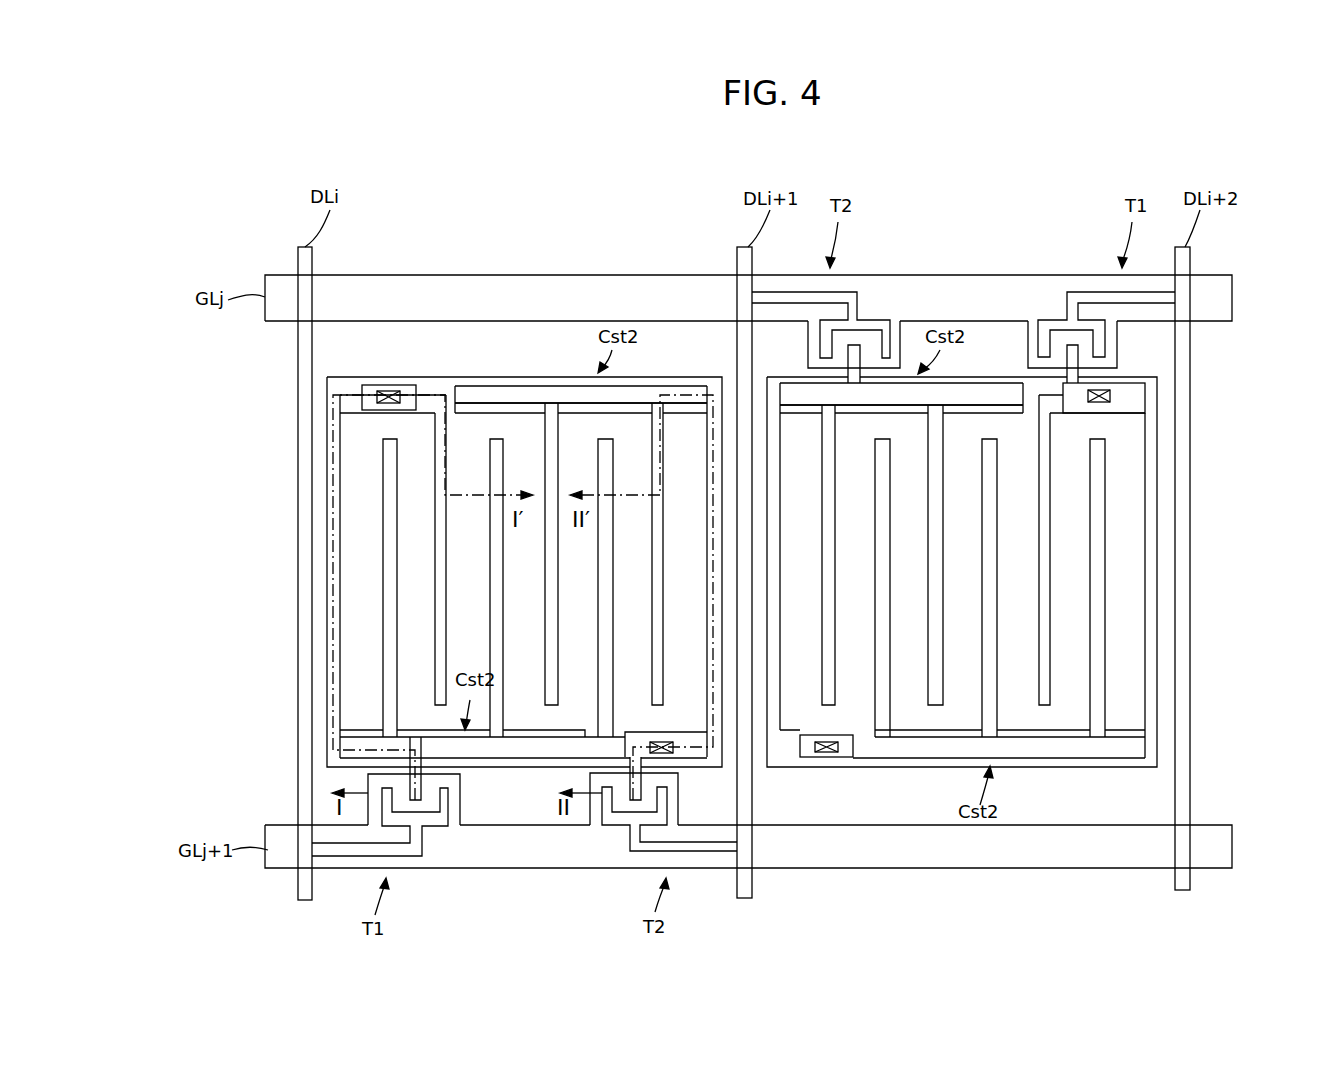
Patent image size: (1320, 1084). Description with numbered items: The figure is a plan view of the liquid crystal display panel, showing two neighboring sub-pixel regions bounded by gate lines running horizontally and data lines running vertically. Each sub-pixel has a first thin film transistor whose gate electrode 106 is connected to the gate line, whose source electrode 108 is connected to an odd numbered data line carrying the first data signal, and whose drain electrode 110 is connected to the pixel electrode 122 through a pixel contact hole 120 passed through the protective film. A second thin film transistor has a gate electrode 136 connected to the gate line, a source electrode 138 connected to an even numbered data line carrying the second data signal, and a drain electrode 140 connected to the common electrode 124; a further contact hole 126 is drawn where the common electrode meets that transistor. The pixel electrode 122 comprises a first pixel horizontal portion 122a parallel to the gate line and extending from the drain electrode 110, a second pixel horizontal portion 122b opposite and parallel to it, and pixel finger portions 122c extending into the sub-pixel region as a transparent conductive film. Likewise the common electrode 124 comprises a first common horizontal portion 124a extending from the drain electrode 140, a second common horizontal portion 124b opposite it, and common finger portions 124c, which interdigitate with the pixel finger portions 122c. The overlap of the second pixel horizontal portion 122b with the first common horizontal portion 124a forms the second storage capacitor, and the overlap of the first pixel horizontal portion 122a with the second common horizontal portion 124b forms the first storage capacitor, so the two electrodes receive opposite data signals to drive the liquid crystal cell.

The gate electrode 106 is at (462, 808).
The source electrode 108 is at (358, 852).
The drain electrode 110 is at (422, 782).
The pixel contact hole 120 is at (393, 385).
The pixel electrode 122 is at (232, 497).
The first pixel horizontal portion 122a is at (355, 728).
The second pixel horizontal portion 122b is at (377, 407).
The pixel finger portions 122c is at (435, 548).
The common electrode 124 is at (878, 497).
The first common horizontal portion 124a is at (578, 413).
The second common horizontal portion 124b is at (568, 730).
The common finger portions 124c is at (500, 672).
The contact hole (storage electrode to drain) 126 is at (668, 732).
The gate electrode 136 is at (680, 810).
The source electrode 138 is at (632, 852).
The drain electrode 140 is at (667, 822).